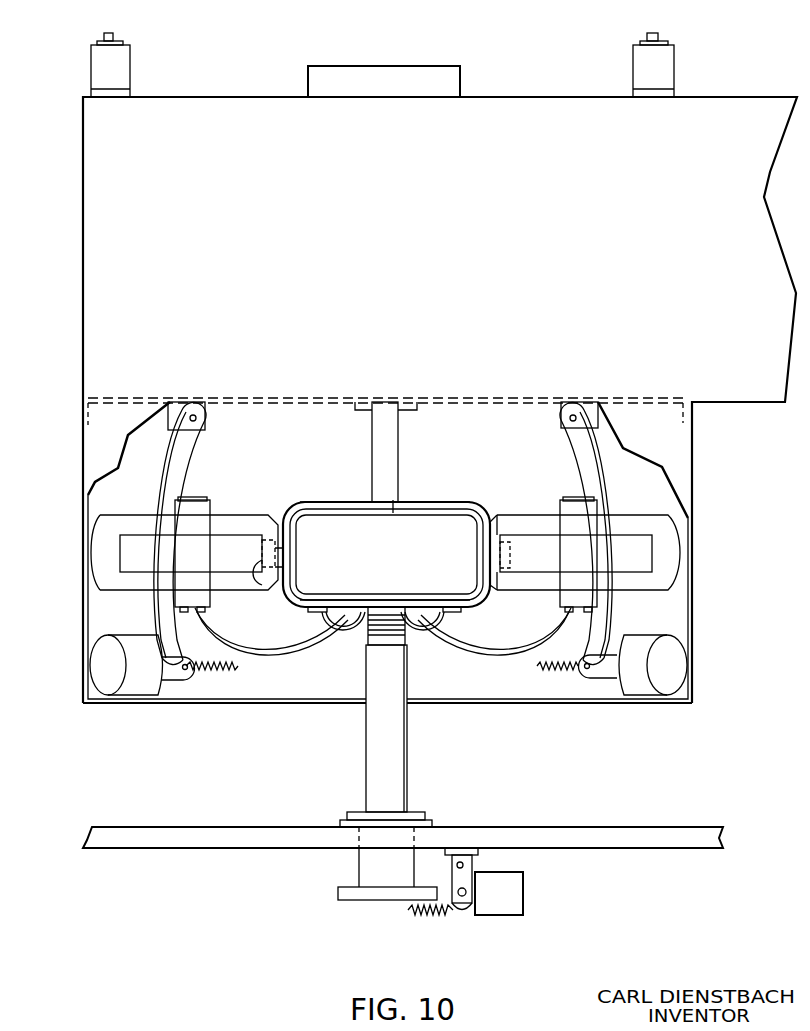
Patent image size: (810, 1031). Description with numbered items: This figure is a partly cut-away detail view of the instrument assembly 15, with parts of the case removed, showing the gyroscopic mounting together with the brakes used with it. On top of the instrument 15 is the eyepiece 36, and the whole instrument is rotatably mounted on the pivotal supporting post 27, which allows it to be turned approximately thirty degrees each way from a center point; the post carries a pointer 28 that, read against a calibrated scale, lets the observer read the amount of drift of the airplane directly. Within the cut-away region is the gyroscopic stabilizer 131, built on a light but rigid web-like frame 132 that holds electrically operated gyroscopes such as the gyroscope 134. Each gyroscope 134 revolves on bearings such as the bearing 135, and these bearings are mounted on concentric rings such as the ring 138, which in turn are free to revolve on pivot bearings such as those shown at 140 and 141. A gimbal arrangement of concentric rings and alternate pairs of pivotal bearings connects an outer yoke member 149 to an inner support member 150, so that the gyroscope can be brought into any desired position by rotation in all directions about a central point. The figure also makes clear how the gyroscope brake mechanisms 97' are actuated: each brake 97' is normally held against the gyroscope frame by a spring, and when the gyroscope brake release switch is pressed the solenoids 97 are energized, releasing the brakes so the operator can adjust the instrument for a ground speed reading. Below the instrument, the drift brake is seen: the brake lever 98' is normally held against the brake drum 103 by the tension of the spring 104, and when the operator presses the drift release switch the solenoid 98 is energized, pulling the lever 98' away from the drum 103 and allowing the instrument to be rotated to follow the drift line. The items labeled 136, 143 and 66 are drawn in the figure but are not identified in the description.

The instrument 15 is at (507, 97).
The eyepiece 36 is at (371, 66).
The inner support member 150 is at (398, 438).
The concentric ring 138 is at (423, 502).
The connection 136 is at (393, 513).
The gyroscope 134 is at (293, 560).
The bearing 135 is at (396, 602).
The gyroscopic stabilizer 131 is at (517, 530).
The pivot bearing 140 is at (510, 553).
The left sleeve 143 is at (93, 560).
The pivot bearing 141 is at (262, 585).
The web-like frame 132 is at (120, 590).
The gyroscope brake 97' is at (383, 533).
The gyroscope brake release solenoid 97 is at (388, 684).
The spring 66 is at (214, 672).
The outer yoke member 149 is at (405, 640).
The pivotal supporting post 27 is at (407, 748).
The pointer 28 is at (382, 811).
The brake drum 103 is at (338, 893).
The brake lever 98' is at (448, 879).
The solenoid 98 is at (517, 893).
The spring 104 is at (428, 912).